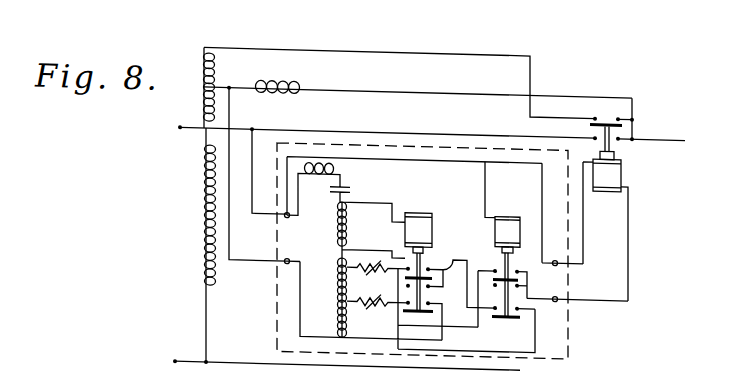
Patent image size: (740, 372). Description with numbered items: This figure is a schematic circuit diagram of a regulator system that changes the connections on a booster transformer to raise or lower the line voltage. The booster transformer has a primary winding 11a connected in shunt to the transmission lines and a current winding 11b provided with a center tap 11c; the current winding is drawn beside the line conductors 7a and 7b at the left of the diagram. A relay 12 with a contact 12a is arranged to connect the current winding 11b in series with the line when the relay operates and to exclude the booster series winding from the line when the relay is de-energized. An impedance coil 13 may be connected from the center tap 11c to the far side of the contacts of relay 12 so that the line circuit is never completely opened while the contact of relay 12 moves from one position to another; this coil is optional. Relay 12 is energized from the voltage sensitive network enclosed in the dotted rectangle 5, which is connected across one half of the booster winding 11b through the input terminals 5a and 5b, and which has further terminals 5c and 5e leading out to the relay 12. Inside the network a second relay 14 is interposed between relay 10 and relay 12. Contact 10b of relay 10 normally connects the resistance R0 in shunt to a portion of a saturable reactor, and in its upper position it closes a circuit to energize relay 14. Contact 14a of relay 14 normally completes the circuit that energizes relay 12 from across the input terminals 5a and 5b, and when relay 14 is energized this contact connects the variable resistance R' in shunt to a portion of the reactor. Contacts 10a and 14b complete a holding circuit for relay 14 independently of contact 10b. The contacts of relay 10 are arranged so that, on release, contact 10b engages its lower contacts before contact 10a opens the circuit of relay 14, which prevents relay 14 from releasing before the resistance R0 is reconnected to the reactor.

The voltage sensitive network 5 is at (568, 332).
The input terminal 5a is at (288, 216).
The input terminal 5b is at (289, 257).
The terminal 5c is at (555, 251).
The terminal 5e is at (557, 288).
The supply conductor 7a is at (180, 129).
The supply conductor 7b is at (186, 361).
The relay 10 is at (405, 229).
The contact 10a is at (433, 306).
The contact 10b is at (446, 274).
The primary winding 11a is at (204, 186).
The current winding 11b is at (203, 99).
The center tap 11c is at (226, 85).
The relay 12 is at (616, 157).
The contact 12a is at (636, 115).
The impedance coil 13 is at (300, 86).
The second relay 14 is at (495, 230).
The contact 14a is at (518, 272).
The contact 14b is at (520, 309).
The resistance R0 is at (372, 277).
The variable resistance R' is at (372, 312).